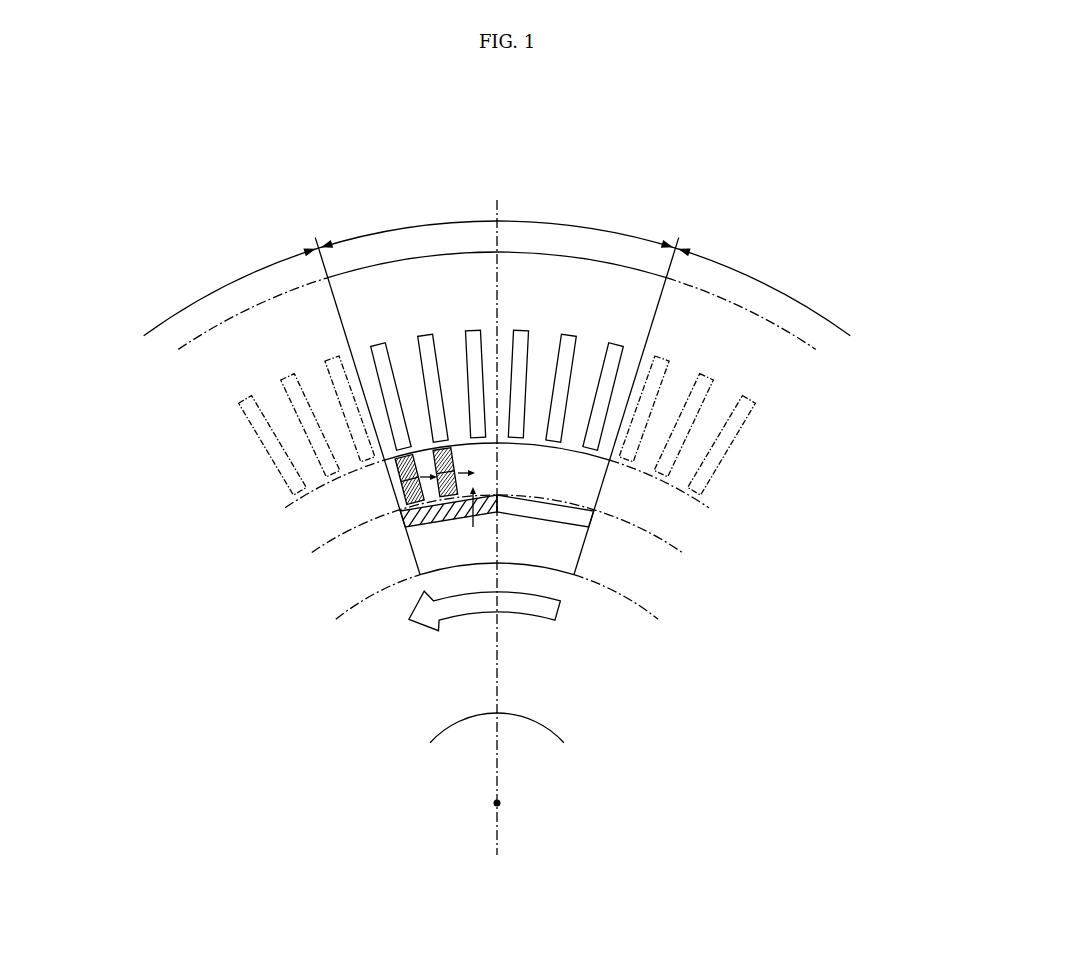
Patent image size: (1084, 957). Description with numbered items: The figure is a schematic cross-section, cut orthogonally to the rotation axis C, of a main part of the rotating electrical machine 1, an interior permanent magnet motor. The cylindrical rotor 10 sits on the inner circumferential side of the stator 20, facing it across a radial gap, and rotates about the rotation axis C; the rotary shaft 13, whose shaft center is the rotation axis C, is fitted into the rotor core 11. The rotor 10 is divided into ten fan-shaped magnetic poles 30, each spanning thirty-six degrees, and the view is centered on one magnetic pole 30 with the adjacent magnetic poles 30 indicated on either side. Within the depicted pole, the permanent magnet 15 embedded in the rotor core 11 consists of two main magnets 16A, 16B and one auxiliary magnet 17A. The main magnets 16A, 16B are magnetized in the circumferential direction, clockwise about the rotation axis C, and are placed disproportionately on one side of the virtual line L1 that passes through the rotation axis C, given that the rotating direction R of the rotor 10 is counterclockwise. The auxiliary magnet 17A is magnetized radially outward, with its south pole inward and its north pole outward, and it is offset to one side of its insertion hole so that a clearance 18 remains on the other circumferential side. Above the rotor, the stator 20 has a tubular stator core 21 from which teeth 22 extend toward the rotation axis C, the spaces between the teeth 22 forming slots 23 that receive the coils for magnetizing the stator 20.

The rotating electrical machine 1 is at (333, 171).
The rotor 10 is at (590, 564).
The rotor core 11 is at (425, 555).
The rotary shaft 13 is at (537, 748).
The permanent magnet 15 is at (313, 502).
The main magnet 16A is at (400, 470).
The main magnet 16B is at (450, 485).
The auxiliary magnet 17A is at (423, 522).
The clearance 18 is at (537, 512).
The stator 20 is at (403, 264).
The stator core 21 is at (352, 305).
The teeth 22 is at (577, 436).
The slots 23 is at (615, 350).
The magnetic pole 30 is at (604, 250).
The rotating direction R is at (455, 612).
The virtual line L1 is at (497, 677).
The rotation axis C is at (500, 803).